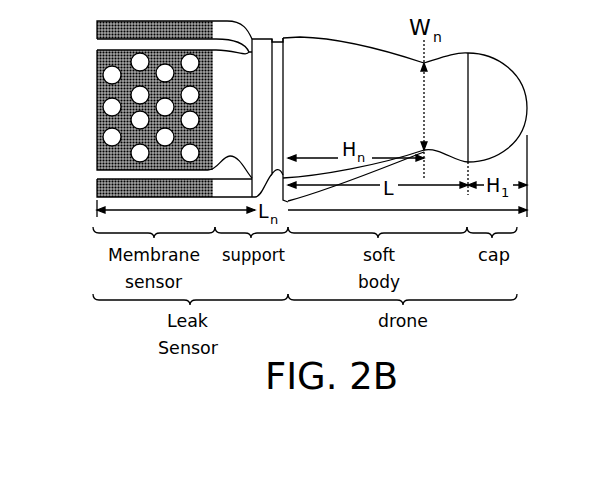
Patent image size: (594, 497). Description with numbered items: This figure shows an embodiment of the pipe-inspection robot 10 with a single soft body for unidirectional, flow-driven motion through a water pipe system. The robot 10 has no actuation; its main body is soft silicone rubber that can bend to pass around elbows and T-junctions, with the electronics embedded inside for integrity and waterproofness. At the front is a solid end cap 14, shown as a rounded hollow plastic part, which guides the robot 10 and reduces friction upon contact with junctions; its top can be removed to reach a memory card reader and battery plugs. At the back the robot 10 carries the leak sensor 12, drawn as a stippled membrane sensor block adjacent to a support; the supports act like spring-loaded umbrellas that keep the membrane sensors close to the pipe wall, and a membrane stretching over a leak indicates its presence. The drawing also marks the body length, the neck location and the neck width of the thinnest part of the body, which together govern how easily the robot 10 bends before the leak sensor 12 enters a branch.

The robot 10 is at (355, 54).
The leak sensor 12 is at (96, 52).
The cap 14 is at (508, 80).